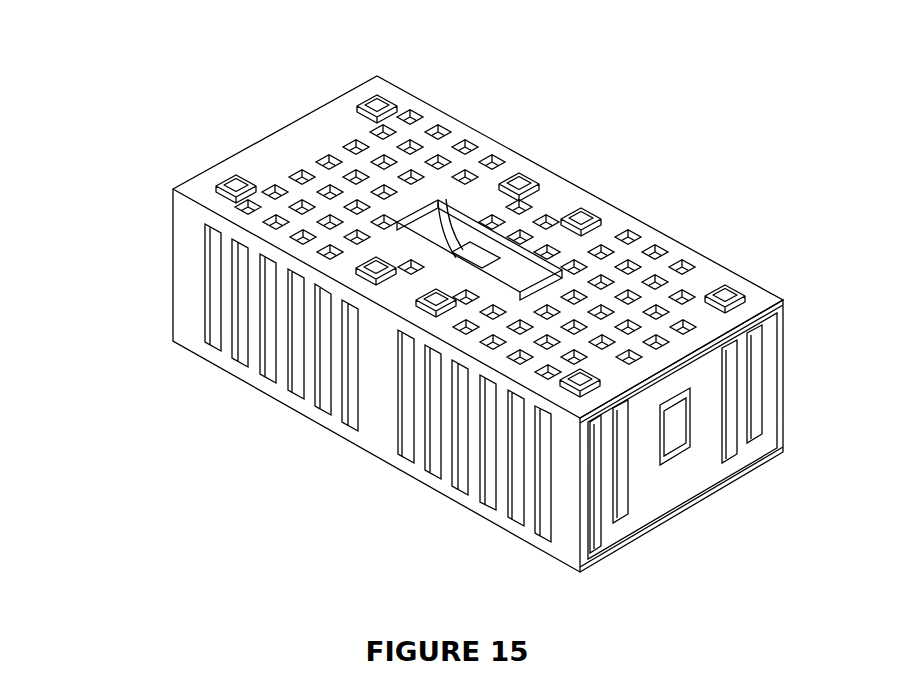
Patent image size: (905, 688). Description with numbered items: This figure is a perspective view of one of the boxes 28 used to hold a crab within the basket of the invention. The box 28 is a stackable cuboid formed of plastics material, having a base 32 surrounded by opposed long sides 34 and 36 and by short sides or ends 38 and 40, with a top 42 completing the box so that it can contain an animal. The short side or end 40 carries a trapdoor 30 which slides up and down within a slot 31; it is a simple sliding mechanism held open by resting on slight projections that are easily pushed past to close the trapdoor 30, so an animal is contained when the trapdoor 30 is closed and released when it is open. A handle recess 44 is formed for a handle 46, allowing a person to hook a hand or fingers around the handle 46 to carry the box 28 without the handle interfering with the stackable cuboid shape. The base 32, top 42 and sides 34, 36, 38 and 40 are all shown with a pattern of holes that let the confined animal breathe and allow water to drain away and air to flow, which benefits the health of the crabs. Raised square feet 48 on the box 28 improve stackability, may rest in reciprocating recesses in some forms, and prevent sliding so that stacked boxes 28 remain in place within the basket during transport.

The box 28 is at (131, 213).
The trapdoor 30 is at (740, 400).
The slot 31 is at (760, 310).
The base 32 is at (380, 425).
The long side 34 is at (193, 273).
The long side 36 is at (660, 238).
The short side or end 38 is at (290, 120).
The short side or end 40 is at (630, 533).
The top 42 is at (560, 205).
The handle recess 44 is at (452, 225).
The handle 46 is at (497, 237).
The raised square feet 48 is at (233, 183).